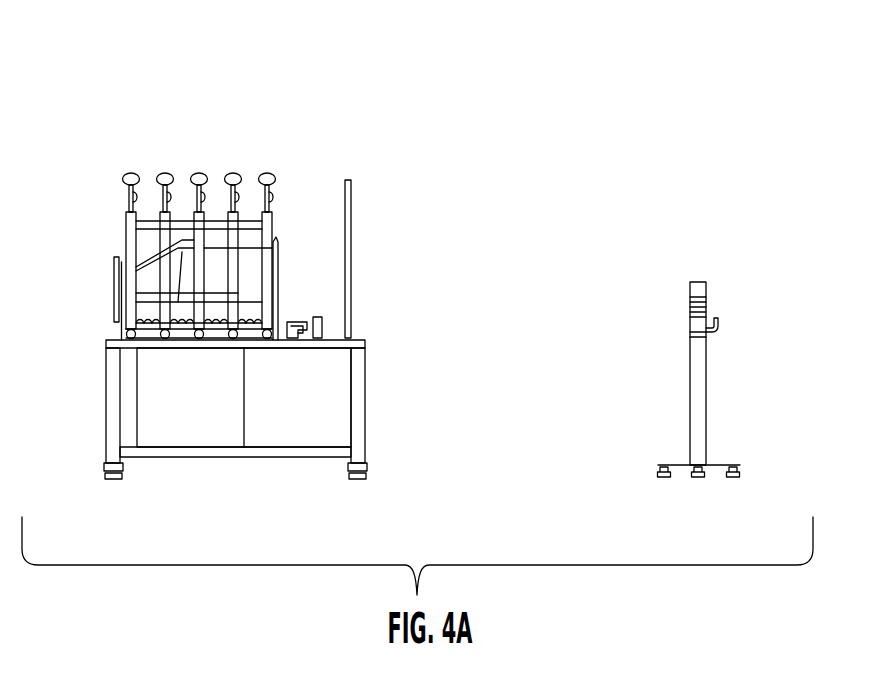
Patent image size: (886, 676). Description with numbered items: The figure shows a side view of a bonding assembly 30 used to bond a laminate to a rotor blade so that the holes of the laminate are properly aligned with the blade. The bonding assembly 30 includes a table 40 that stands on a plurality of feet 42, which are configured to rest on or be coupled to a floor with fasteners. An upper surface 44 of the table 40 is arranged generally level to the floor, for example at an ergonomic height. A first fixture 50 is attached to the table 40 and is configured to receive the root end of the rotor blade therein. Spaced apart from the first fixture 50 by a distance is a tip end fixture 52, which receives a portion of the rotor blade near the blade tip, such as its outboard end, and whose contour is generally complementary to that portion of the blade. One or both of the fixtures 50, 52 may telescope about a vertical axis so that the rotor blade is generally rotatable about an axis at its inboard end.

The bonding assembly 30 is at (571, 170).
The table 40 is at (325, 390).
The feet 42 is at (103, 469).
The upper surface 44 is at (333, 338).
The first fixture 50 is at (263, 148).
The tip end fixture 52 is at (757, 318).